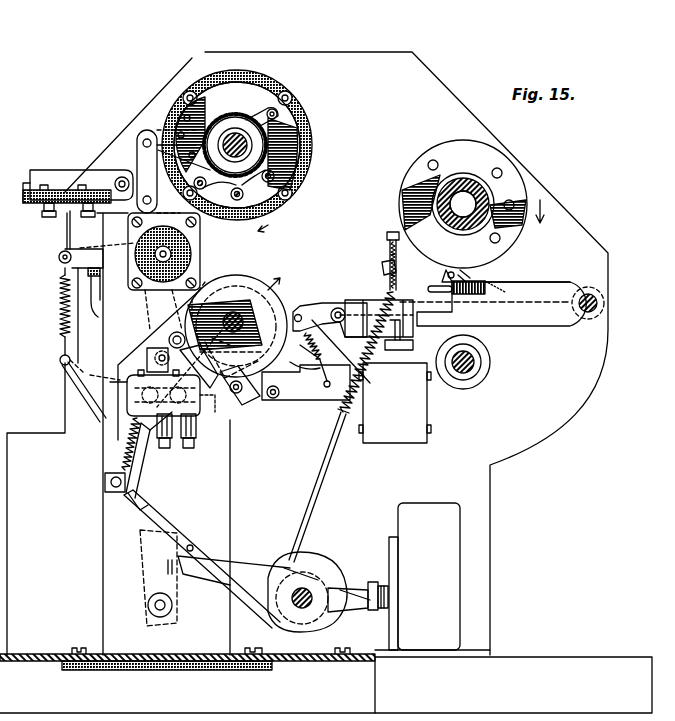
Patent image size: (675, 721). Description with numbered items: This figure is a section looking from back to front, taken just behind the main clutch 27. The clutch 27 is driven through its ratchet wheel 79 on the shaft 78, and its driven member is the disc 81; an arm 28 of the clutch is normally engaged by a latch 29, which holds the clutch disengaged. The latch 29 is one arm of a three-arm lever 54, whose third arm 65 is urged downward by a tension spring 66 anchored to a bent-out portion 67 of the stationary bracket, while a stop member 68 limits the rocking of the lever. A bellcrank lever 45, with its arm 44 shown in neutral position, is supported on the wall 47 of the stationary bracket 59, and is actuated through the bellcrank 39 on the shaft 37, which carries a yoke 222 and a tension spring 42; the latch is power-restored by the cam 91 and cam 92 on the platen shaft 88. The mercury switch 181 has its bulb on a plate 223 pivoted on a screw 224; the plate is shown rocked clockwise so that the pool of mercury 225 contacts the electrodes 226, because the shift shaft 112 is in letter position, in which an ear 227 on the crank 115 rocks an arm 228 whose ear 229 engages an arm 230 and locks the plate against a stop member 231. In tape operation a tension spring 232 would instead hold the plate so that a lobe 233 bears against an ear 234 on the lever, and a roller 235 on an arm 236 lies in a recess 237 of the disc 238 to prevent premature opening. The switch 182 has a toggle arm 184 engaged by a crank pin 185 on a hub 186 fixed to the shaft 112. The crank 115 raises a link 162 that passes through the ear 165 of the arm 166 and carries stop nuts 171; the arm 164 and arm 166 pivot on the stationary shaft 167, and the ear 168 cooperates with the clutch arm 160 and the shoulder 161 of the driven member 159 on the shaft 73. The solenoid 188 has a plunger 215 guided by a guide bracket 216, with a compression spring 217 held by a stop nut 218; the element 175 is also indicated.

The clutch 27 is at (237, 72).
The arm 28 is at (163, 130).
The latch 29 is at (146, 133).
The shaft 78 is at (226, 140).
The ratchet wheel 79 is at (241, 118).
The disc 81 is at (290, 120).
The driven member 159 is at (408, 181).
The shaft 73 is at (462, 190).
The third arm 65 is at (80, 250).
The tension spring 66 is at (60, 292).
The stop member 68 is at (92, 297).
The bent-out portion 67 is at (75, 390).
The screw 224 is at (95, 369).
The three-arm lever 54 is at (142, 308).
The cam 91 is at (263, 290).
The shaft 88 is at (233, 314).
The cam 92 is at (206, 282).
The recess 237 is at (227, 349).
The lobe 233 is at (168, 336).
The mercury switch 181 is at (172, 366).
The bellcrank lever 45 is at (199, 366).
The ear 234 is at (130, 375).
The electrodes 226 is at (162, 448).
The pool of mercury 225 is at (203, 431).
The arm 236 is at (208, 412).
The tension spring 232 is at (118, 450).
The stop member 231 is at (105, 491).
The arm 230 is at (145, 487).
The plate 223 is at (153, 474).
The ear 229 is at (150, 503).
The arm 228 is at (152, 522).
The ear 227 is at (177, 578).
The crank 115 is at (210, 565).
The stationary bracket 59 is at (68, 588).
The wall 47 is at (220, 506).
The crank pin 185 is at (278, 593).
The shift shaft 112 is at (305, 606).
The hub 186 is at (332, 613).
The arm 184 is at (362, 592).
The switch 182 is at (446, 503).
The link 162 is at (328, 478).
The yoke 222 is at (321, 307).
The shaft 37 is at (338, 309).
The tension spring 42 is at (304, 344).
The bellcrank 39 is at (347, 346).
The disc 238 is at (299, 357).
The roller 235 is at (248, 400).
The arm 44 is at (209, 381).
The ear 165 is at (376, 300).
The stop nuts 171 is at (383, 268).
The compression spring 217 is at (389, 250).
The stop nut 218 is at (388, 235).
The plunger 215 is at (400, 352).
The solenoid 188 is at (430, 410).
The guide bracket 216 is at (430, 289).
The stop 175 is at (441, 278).
The clutch arm 160 is at (448, 272).
The shoulder 161 is at (464, 272).
The ear 168 is at (442, 290).
The arm 164 is at (536, 322).
The arm 166 is at (505, 292).
The stationary shaft 167 is at (598, 312).